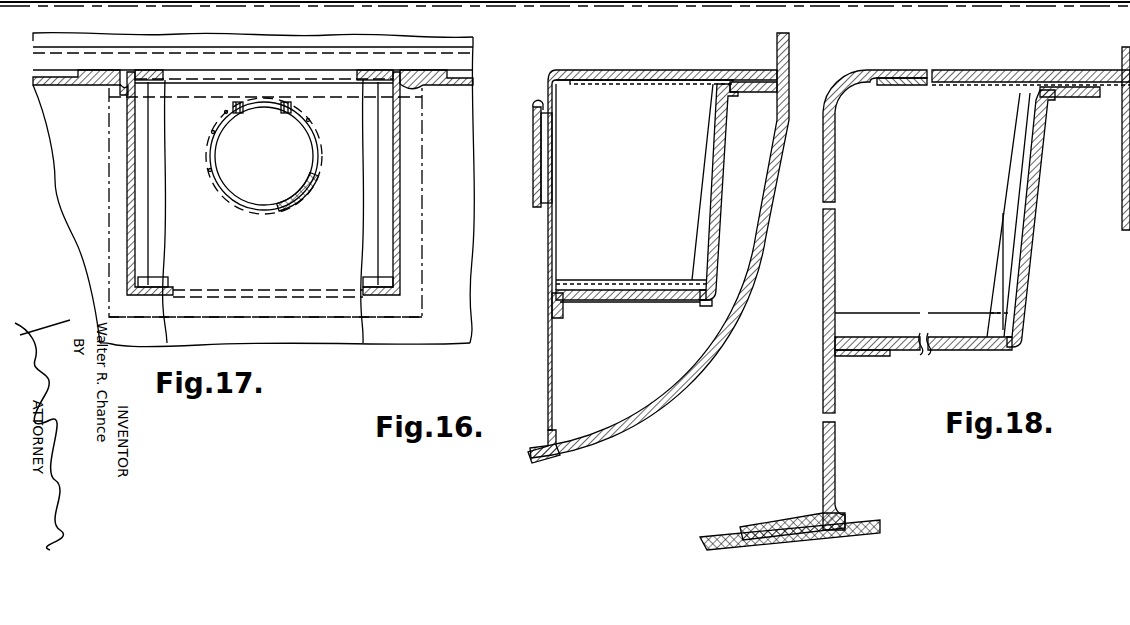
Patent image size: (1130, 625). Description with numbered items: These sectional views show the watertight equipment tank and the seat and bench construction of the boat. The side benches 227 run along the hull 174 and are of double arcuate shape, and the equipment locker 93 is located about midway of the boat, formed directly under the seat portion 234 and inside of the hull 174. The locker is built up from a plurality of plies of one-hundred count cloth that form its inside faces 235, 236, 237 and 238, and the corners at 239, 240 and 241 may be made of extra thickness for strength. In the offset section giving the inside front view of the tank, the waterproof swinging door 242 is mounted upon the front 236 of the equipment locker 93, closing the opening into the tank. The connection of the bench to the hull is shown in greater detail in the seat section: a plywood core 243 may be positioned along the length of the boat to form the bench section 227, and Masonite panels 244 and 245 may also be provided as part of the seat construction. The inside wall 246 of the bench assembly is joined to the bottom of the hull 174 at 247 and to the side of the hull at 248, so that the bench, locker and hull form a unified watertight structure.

In FIG. 17, the equipment locker 93 is at (327, 318).
In FIG. 16, the equipment locker 93 is at (628, 302).
In FIG. 16, the hull 174 is at (749, 297).
In FIG. 18, the hull 174 is at (854, 527).
In FIG. 18, the side benches 227 is at (925, 72).
In FIG. 17, the seat portion 234 is at (366, 76).
In FIG. 16, the seat portion 234 is at (669, 54).
In FIG. 16, the inside face 235 is at (643, 83).
In FIG. 16, the front inside face 236 is at (556, 176).
In FIG. 16, the inside face 237 is at (722, 168).
In FIG. 16, the inside face 238 is at (628, 290).
In FIG. 16, the corner 239 is at (562, 316).
In FIG. 16, the corner 240 is at (710, 306).
In FIG. 16, the corner 241 is at (748, 92).
In FIG. 17, the waterproof swinging door 242 is at (284, 216).
In FIG. 16, the waterproof swinging door 242 is at (535, 202).
In FIG. 18, the plywood core 243 is at (973, 85).
In FIG. 18, the Masonite panel 244 is at (1003, 213).
In FIG. 18, the Masonite panel 245 is at (948, 337).
In FIG. 18, the inside wall 246 is at (840, 382).
In FIG. 18, the joint to hull bottom 247 is at (790, 513).
In FIG. 18, the joint to hull side 248 is at (1125, 47).